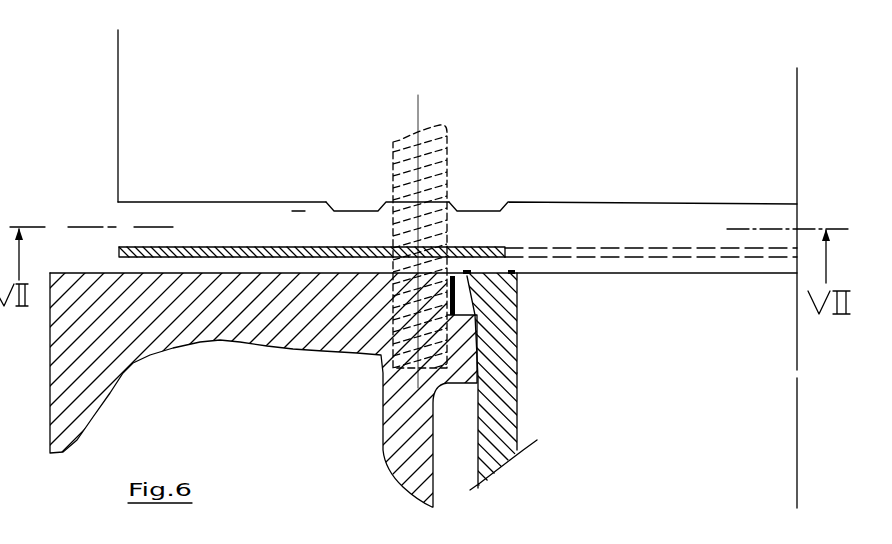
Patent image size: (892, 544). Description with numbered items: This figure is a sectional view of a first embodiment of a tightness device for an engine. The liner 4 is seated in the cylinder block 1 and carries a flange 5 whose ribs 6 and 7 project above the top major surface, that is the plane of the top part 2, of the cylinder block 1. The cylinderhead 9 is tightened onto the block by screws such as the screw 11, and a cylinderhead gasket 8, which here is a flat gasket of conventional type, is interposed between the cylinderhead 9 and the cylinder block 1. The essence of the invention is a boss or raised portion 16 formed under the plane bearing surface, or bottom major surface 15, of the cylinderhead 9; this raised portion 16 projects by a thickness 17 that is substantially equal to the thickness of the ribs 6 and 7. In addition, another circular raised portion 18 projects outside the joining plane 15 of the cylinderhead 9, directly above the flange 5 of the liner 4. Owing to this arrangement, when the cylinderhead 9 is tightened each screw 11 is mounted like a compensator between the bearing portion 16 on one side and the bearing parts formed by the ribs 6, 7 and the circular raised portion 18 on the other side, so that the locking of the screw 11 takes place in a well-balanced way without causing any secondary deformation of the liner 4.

The cylinder block 1 is at (78, 345).
The top part 2 is at (90, 271).
The liner 4 is at (507, 405).
The flange 5 is at (507, 325).
The rib 6 is at (513, 274).
The rib 7 is at (490, 295).
The cylinderhead gasket 8 is at (165, 250).
The cylinderhead 9 is at (149, 124).
The screw 11 is at (447, 143).
The bottom major surface 15 is at (250, 200).
The raised portion 16 is at (354, 208).
The thickness 17 is at (298, 222).
The circular raised portion 18 is at (477, 210).